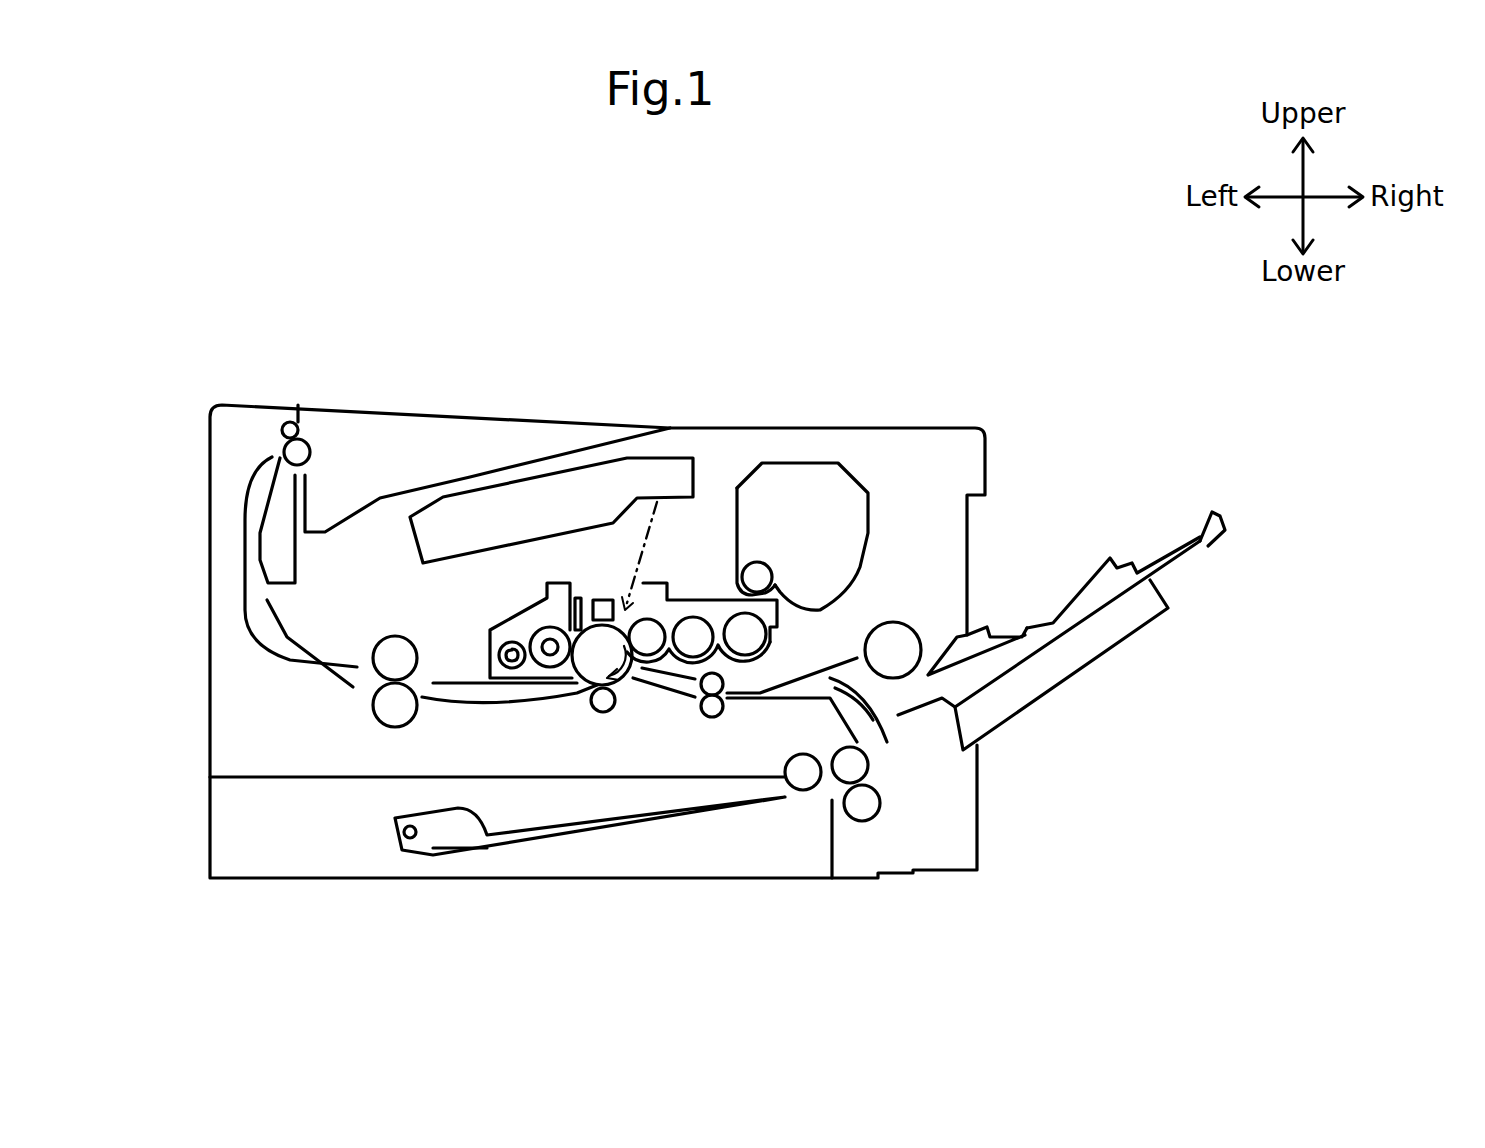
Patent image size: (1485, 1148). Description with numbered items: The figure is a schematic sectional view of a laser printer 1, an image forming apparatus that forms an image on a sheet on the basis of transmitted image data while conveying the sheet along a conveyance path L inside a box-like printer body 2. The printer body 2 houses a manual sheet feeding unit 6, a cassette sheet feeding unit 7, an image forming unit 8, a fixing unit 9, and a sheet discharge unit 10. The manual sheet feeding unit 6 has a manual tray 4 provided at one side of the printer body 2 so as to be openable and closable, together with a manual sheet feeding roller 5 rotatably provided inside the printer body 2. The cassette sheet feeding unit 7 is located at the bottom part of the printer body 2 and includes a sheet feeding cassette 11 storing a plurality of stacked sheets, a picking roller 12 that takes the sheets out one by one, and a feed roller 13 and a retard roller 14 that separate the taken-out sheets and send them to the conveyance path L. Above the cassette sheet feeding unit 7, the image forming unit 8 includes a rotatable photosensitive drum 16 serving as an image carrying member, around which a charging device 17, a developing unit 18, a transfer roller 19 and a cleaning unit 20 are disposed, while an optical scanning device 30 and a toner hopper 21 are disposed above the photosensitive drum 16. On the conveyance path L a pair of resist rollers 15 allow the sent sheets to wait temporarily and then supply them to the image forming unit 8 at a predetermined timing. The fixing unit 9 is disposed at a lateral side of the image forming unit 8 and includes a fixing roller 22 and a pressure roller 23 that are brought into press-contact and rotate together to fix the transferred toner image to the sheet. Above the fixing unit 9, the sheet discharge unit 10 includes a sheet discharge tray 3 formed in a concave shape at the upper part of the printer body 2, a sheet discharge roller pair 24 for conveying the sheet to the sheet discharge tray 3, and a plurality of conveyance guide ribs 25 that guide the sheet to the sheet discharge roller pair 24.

The laser printer 1 is at (645, 253).
The printer body 2 is at (210, 650).
The sheet discharge tray 3 is at (395, 490).
The manual tray 4 is at (1160, 560).
The manual sheet feeding roller 5 is at (900, 628).
The manual sheet feeding unit 6 is at (1061, 578).
The cassette sheet feeding unit 7 is at (717, 825).
The image forming unit 8 is at (662, 624).
The fixing unit 9 is at (353, 705).
The sheet discharge unit 10 is at (257, 428).
The sheet feeding cassette 11 is at (690, 818).
The picking roller 12 is at (803, 790).
The feed roller 13 is at (865, 765).
The retard roller 14 is at (876, 810).
The pair of resist rollers 15 is at (722, 708).
The photosensitive drum 16 is at (625, 680).
The charging device 17 is at (603, 600).
The developing unit 18 is at (768, 635).
The transfer roller 19 is at (605, 712).
The cleaning unit 20 is at (495, 627).
The toner hopper 21 is at (805, 470).
The fixing roller 22 is at (395, 636).
The pressure roller 23 is at (380, 720).
The sheet discharge roller pair 24 is at (312, 441).
The conveyance guide ribs 25 is at (288, 572).
The optical scanning device 30 is at (535, 480).
The conveyance path L is at (488, 700).